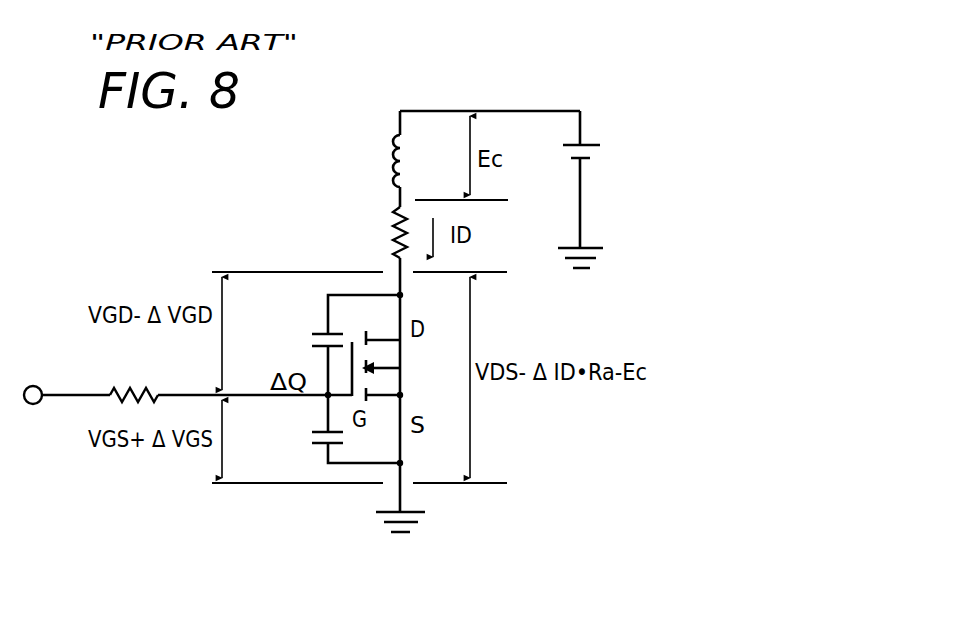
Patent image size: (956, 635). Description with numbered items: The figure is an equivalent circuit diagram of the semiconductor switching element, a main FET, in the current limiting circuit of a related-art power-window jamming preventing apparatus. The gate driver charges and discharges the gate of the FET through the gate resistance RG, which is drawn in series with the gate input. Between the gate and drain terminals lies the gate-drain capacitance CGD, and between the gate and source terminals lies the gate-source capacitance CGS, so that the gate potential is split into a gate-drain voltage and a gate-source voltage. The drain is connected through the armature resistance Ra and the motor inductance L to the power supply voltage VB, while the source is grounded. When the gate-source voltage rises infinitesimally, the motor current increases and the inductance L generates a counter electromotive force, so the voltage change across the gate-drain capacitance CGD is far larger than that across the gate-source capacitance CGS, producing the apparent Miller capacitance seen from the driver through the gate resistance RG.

The inductance of the motor L is at (308, 161).
The armature resistance Ra is at (383, 232).
The power supply voltage VB is at (606, 189).
The gate resistance RG is at (134, 378).
The gate-drain capacitance CGD is at (331, 345).
The gate-source capacitance CGS is at (331, 431).